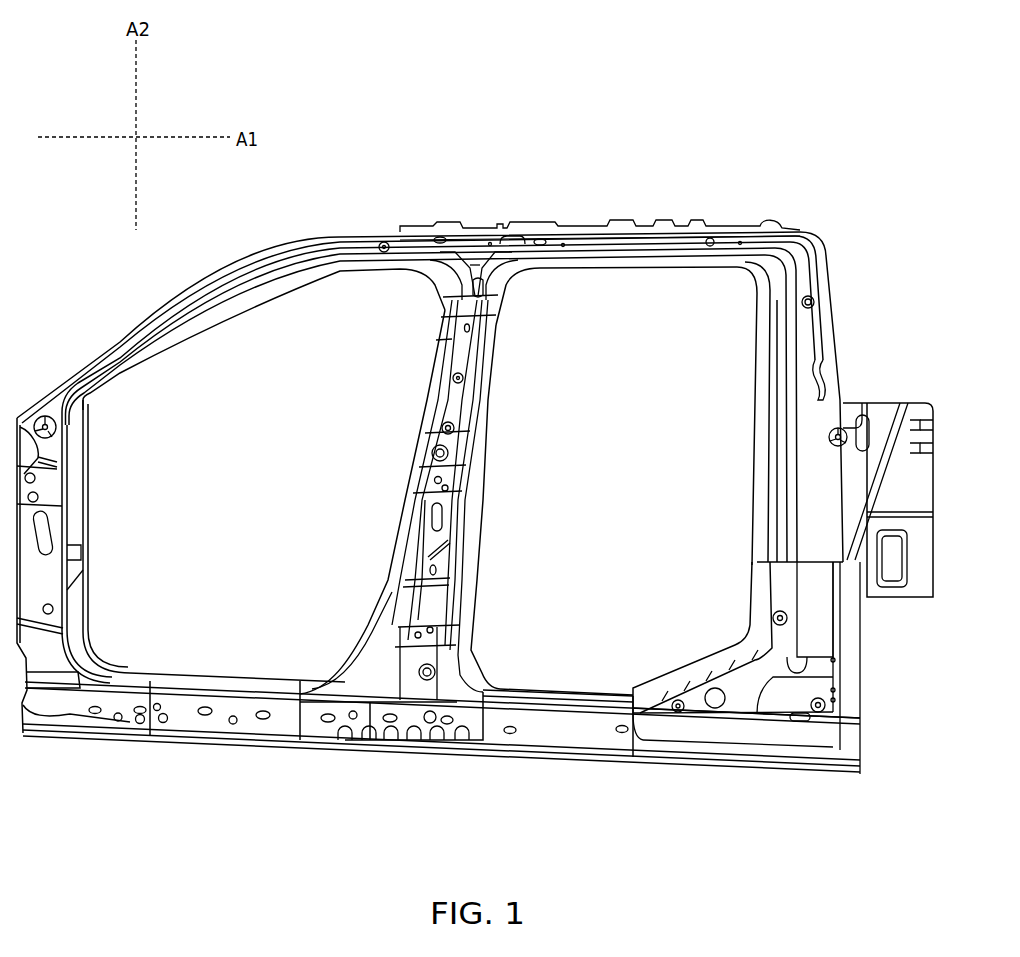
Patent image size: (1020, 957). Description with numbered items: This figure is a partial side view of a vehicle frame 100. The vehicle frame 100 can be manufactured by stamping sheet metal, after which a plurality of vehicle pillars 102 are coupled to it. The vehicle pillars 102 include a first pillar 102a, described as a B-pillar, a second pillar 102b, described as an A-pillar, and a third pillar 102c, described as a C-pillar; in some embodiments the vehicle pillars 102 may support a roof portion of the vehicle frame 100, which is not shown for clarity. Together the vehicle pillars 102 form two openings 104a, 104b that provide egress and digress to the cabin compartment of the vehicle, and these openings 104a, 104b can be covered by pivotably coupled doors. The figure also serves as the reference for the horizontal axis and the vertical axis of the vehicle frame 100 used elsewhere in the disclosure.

The vehicle frame 100 is at (470, 128).
The vehicle pillars 102 is at (532, 186).
The first pillar 102a is at (499, 333).
The second pillar 102b is at (872, 278).
The third pillar 102c is at (133, 325).
The opening 104a is at (262, 504).
The opening 104b is at (636, 504).